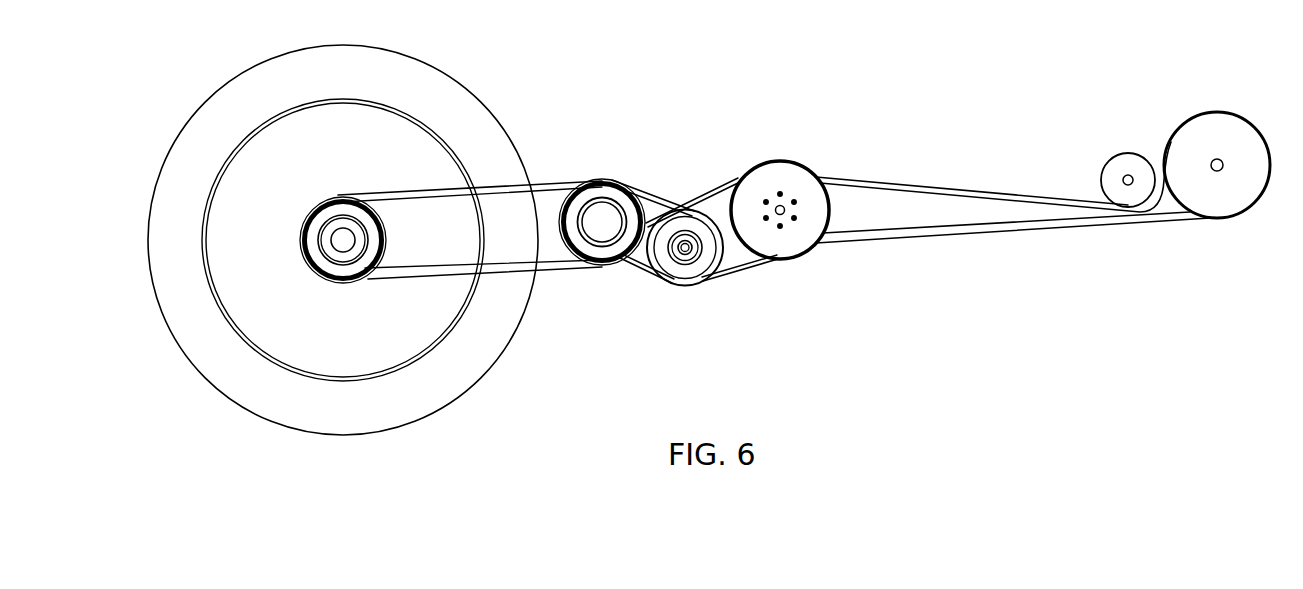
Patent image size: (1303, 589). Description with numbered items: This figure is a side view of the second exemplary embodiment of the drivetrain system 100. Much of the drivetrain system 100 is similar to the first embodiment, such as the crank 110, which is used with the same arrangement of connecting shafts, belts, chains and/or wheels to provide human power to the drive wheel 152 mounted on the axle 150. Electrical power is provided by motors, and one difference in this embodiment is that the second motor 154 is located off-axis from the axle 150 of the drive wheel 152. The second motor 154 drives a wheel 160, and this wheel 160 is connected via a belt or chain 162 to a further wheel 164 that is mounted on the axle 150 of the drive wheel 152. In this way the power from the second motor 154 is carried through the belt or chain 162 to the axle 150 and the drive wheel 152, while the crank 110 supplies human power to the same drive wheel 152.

The drivetrain system 100 is at (176, 40).
The drive wheel 152 is at (170, 152).
The axle 150 is at (332, 237).
The wheel 164 is at (306, 260).
The belt or chain 162 is at (550, 190).
The second motor 154 is at (620, 207).
The wheel 160 is at (565, 250).
The crank 110 is at (1177, 202).